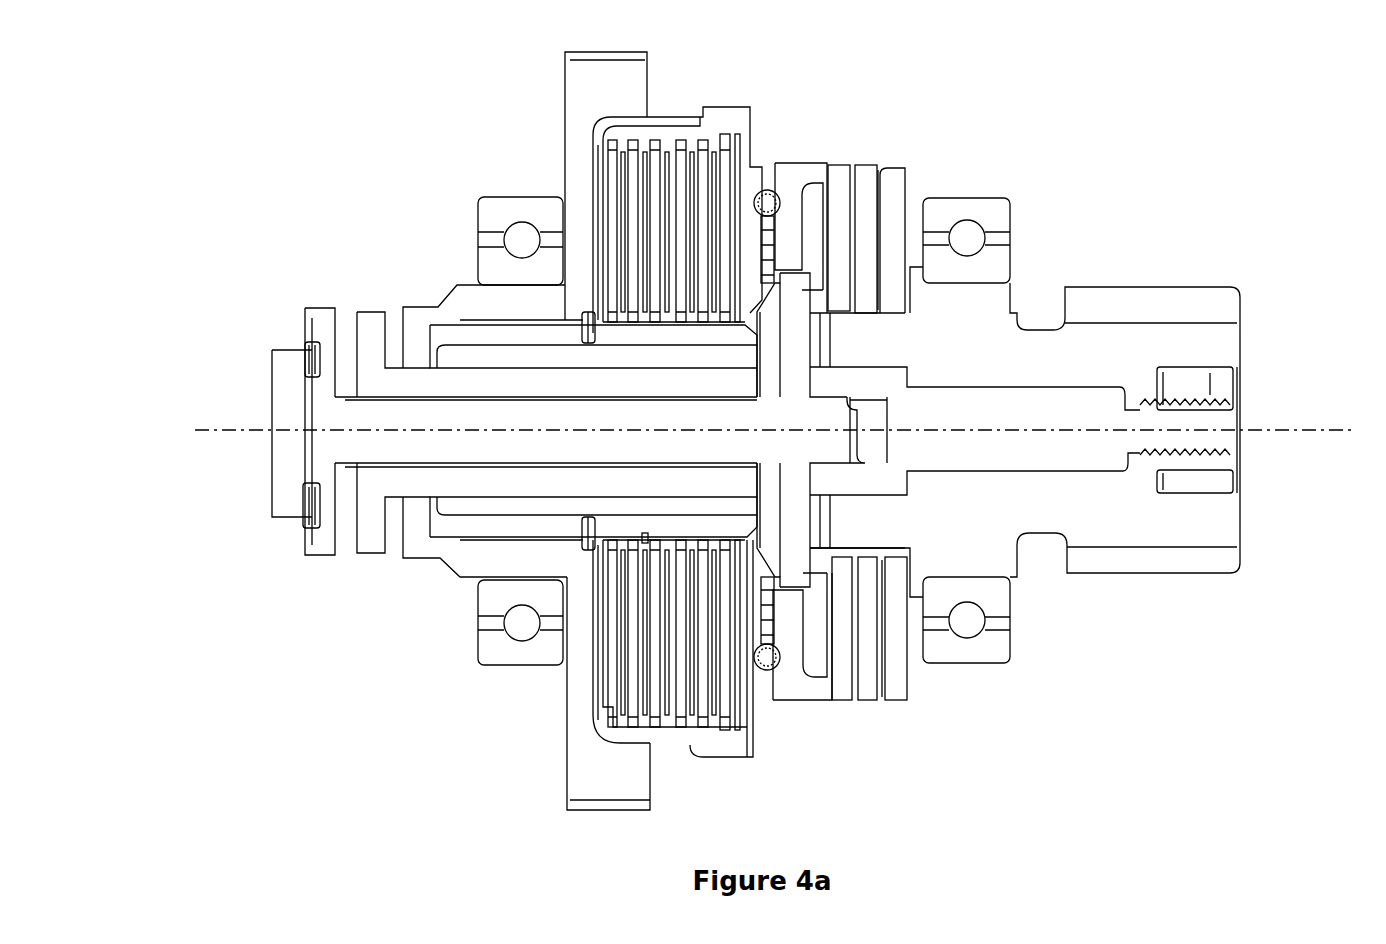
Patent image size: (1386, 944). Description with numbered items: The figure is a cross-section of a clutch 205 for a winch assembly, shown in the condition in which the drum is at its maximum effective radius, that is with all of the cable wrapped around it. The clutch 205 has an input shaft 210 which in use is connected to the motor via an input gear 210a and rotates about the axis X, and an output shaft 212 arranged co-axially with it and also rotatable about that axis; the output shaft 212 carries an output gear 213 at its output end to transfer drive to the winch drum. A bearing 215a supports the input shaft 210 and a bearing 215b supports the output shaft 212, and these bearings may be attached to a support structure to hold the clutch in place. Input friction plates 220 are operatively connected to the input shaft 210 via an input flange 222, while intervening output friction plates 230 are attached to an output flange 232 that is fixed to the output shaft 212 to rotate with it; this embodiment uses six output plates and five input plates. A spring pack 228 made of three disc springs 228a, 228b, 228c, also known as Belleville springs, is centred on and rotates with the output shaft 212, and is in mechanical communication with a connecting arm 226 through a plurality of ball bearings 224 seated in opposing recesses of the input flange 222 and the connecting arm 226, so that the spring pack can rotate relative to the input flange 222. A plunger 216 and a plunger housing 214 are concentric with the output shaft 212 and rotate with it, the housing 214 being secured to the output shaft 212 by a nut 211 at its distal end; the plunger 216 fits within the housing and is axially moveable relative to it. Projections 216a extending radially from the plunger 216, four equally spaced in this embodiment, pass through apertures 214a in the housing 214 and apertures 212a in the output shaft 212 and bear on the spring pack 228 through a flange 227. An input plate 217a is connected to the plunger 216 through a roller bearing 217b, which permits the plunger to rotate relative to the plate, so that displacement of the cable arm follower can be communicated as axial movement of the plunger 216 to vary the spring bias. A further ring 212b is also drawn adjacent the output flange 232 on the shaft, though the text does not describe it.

The clutch 205 is at (326, 176).
The input shaft 210 is at (455, 313).
The input gear 210a is at (600, 78).
The nut 211 is at (1197, 478).
The output shaft 212 is at (610, 357).
The apertures 212a is at (817, 343).
The retaining ring 212b is at (587, 532).
The output gear 213 is at (1153, 557).
The plunger housing 214 is at (380, 335).
The apertures 214a is at (830, 377).
The bearing 215a is at (520, 638).
The bearing 215b is at (967, 643).
The plunger 216 is at (372, 420).
The projections 216a is at (818, 293).
The input plate 217a is at (290, 420).
The roller bearing 217b is at (315, 510).
The input friction plates 220 is at (610, 190).
The input flange 222 is at (747, 167).
The ball bearings 224 is at (768, 189).
The connecting arm 226 is at (800, 180).
The flange 227 is at (773, 317).
The spring pack 228 is at (865, 483).
The disc spring 228a is at (837, 683).
The disc spring 228b is at (867, 683).
The disc spring 228c is at (905, 451).
The output friction plates 230 is at (597, 230).
The output flange 232 is at (645, 317).